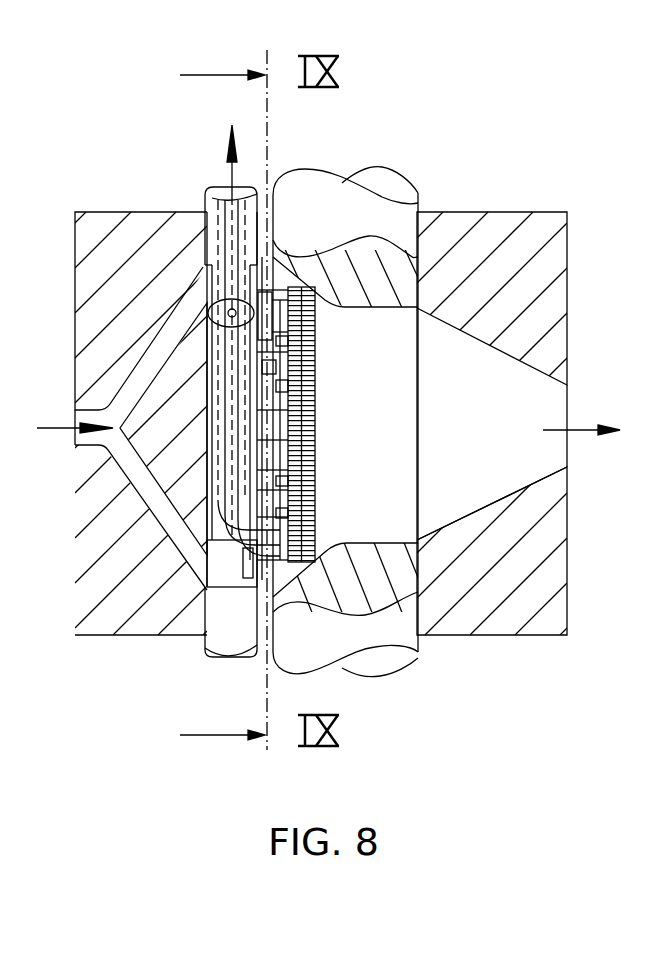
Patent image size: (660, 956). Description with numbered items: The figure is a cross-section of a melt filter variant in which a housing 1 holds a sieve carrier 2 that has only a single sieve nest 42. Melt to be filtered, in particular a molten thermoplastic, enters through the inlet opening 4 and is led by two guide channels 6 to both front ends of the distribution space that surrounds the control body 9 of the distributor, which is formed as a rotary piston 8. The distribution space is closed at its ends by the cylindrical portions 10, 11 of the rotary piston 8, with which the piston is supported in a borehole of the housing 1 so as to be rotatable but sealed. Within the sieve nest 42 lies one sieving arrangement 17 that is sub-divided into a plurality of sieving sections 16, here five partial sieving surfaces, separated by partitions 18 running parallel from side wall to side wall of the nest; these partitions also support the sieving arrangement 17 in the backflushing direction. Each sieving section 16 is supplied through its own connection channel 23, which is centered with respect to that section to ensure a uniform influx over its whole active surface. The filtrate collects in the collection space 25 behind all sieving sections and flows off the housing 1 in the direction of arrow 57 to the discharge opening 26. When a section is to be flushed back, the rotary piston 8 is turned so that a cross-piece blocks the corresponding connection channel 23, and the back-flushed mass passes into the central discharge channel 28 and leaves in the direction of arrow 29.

The housing 1 is at (540, 205).
The sieve carrier 2 is at (365, 215).
The inlet opening 4 is at (73, 408).
The guide channels 6 is at (160, 343).
The rotary piston 8 is at (227, 572).
The control body 9 is at (200, 489).
The cylindrical portion 10 is at (215, 237).
The cylindrical portion 11 is at (230, 623).
The sieving sections 16 is at (390, 470).
The sieving arrangement 17 is at (335, 412).
The partitions 18 is at (287, 390).
The connection channels 23 is at (268, 368).
The collection space 25 is at (310, 484).
The discharge opening 26 is at (560, 445).
The discharge channel 28 is at (233, 223).
The arrow 29 is at (232, 177).
The sieve nest 42 is at (288, 303).
The arrow 57 is at (565, 420).